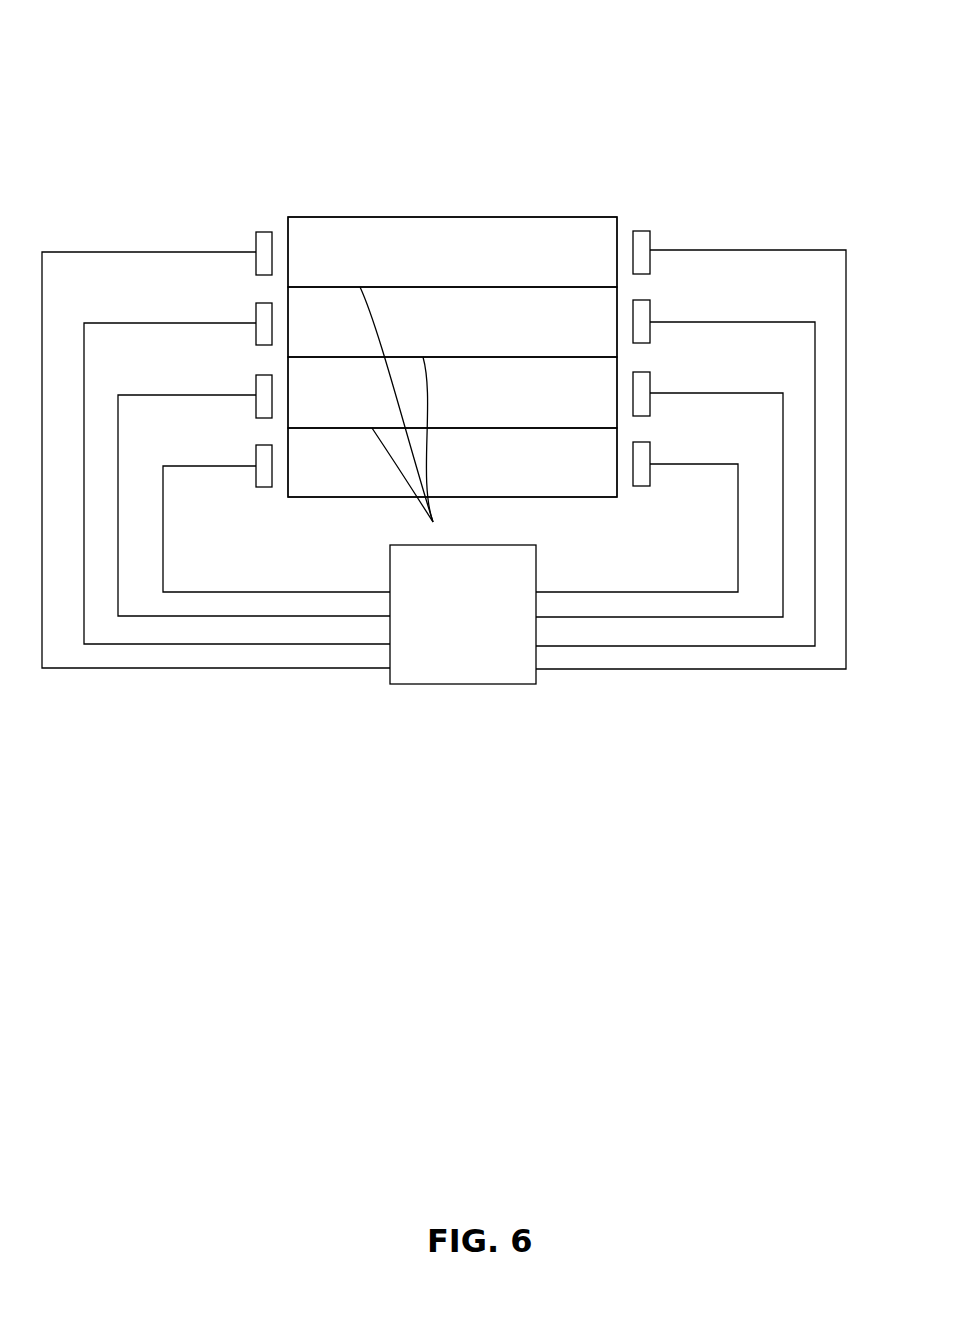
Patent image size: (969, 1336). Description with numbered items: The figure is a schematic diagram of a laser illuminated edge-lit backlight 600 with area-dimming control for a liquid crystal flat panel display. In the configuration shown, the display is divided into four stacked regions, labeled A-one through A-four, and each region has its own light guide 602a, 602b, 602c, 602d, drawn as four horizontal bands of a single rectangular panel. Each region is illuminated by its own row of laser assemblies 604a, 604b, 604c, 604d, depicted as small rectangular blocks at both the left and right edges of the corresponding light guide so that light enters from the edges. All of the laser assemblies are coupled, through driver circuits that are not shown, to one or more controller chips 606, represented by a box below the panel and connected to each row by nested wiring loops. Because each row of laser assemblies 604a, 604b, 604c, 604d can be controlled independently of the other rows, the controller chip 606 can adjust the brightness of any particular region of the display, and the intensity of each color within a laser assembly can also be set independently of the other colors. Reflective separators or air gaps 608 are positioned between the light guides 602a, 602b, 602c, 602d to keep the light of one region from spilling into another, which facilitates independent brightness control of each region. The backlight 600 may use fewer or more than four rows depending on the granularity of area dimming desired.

The laser illuminated edge-lit backlight 600 is at (148, 137).
The light guide 602a is at (370, 240).
The light guide 602b is at (520, 308).
The light guide 602c is at (343, 408).
The light guide 602d is at (557, 468).
The row of laser assemblies 604a is at (257, 232).
The row of laser assemblies 604b is at (256, 323).
The row of laser assemblies 604c is at (256, 395).
The row of laser assemblies 604d is at (256, 466).
The controller chip 606 is at (465, 684).
The reflective separators or air gaps 608 is at (420, 413).